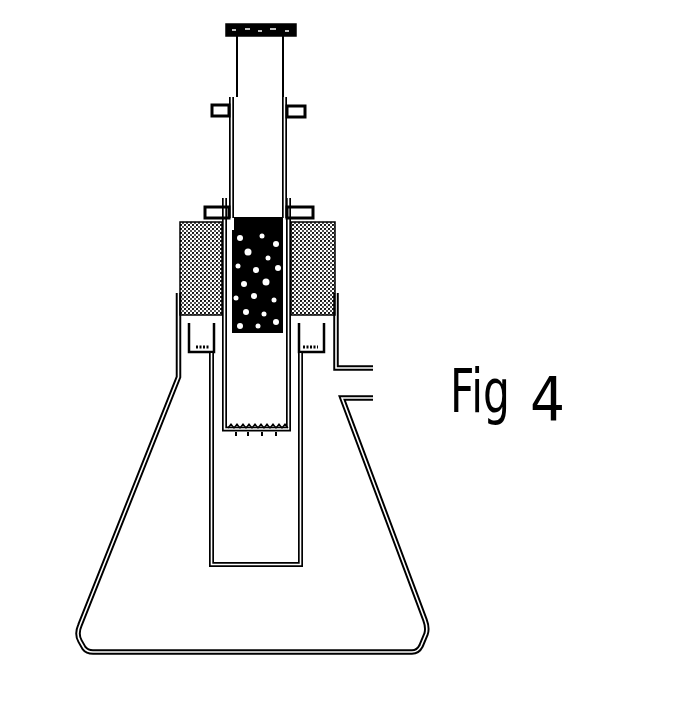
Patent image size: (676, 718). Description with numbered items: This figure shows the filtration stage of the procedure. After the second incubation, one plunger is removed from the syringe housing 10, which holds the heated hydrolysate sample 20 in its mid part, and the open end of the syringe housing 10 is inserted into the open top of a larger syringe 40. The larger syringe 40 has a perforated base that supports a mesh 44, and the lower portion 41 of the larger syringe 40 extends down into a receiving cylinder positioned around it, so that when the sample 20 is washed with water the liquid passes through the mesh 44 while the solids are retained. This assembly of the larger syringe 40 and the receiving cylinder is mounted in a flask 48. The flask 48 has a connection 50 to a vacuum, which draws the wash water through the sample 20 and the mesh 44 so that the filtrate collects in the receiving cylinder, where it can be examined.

The syringe housing 10 is at (292, 168).
The sample 20 is at (283, 263).
The larger syringe 40 is at (205, 210).
The column tube 41 is at (244, 428).
The mesh 44 is at (253, 422).
The flask 48 is at (385, 503).
The connection 50 is at (268, 410).